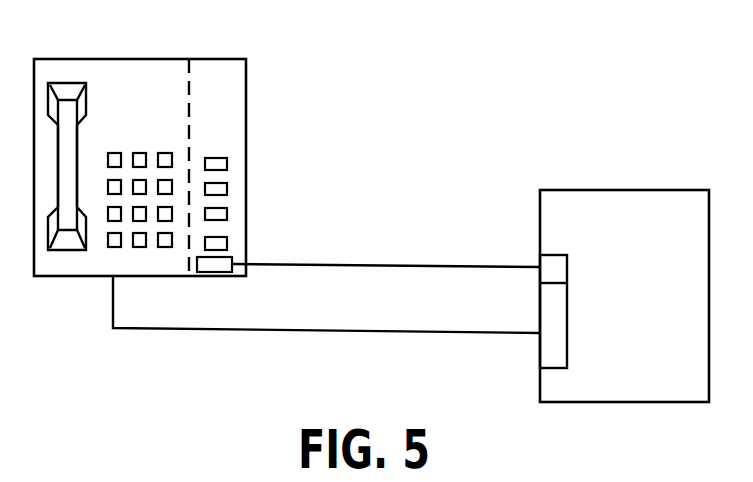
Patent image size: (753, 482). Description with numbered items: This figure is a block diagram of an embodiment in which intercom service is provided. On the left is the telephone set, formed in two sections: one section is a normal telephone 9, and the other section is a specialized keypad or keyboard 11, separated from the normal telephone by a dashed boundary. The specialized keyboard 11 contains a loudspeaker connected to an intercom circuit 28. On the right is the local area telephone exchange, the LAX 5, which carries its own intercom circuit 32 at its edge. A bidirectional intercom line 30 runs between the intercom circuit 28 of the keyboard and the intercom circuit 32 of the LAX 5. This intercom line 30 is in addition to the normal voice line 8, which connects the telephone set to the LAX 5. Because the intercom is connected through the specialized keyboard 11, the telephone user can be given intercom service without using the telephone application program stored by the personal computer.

The normal telephone 9 is at (97, 62).
The specialized keyboard 11 is at (216, 68).
The intercom circuit 28 is at (215, 264).
The bidirectional intercom line 30 is at (424, 264).
The normal voice line 8 is at (395, 329).
The local area telephone exchange (LAX) 5 is at (588, 190).
The intercom circuit of the LAX 32 is at (551, 266).